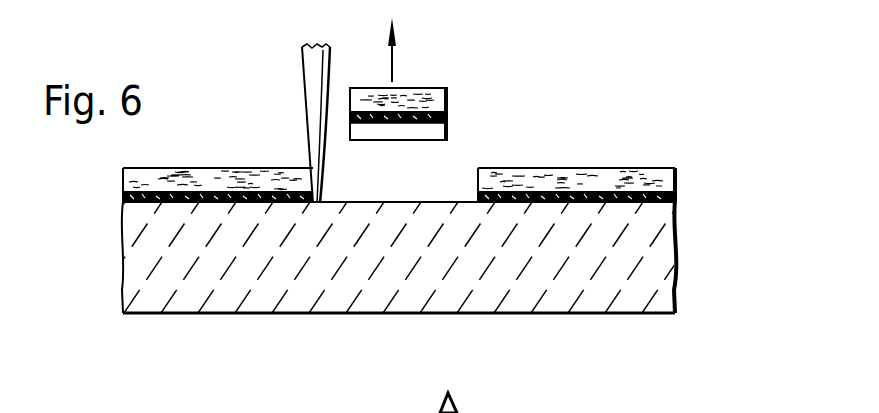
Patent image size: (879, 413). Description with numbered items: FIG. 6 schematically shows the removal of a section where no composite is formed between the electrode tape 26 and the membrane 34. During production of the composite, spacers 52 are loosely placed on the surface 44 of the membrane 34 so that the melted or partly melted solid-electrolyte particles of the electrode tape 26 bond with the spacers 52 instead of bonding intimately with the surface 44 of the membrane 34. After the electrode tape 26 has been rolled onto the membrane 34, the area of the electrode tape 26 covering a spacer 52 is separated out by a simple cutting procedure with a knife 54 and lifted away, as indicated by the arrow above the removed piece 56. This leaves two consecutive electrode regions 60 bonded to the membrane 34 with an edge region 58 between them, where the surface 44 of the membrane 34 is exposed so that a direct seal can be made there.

The electrode tape 26 is at (690, 190).
The membrane 34 is at (640, 273).
The surface 44 is at (372, 202).
The spacers 52 is at (398, 128).
The knife 54 is at (314, 71).
The adhesive layer 56 is at (430, 100).
The edge regions 58 is at (478, 185).
The electrode regions 60 is at (196, 160).